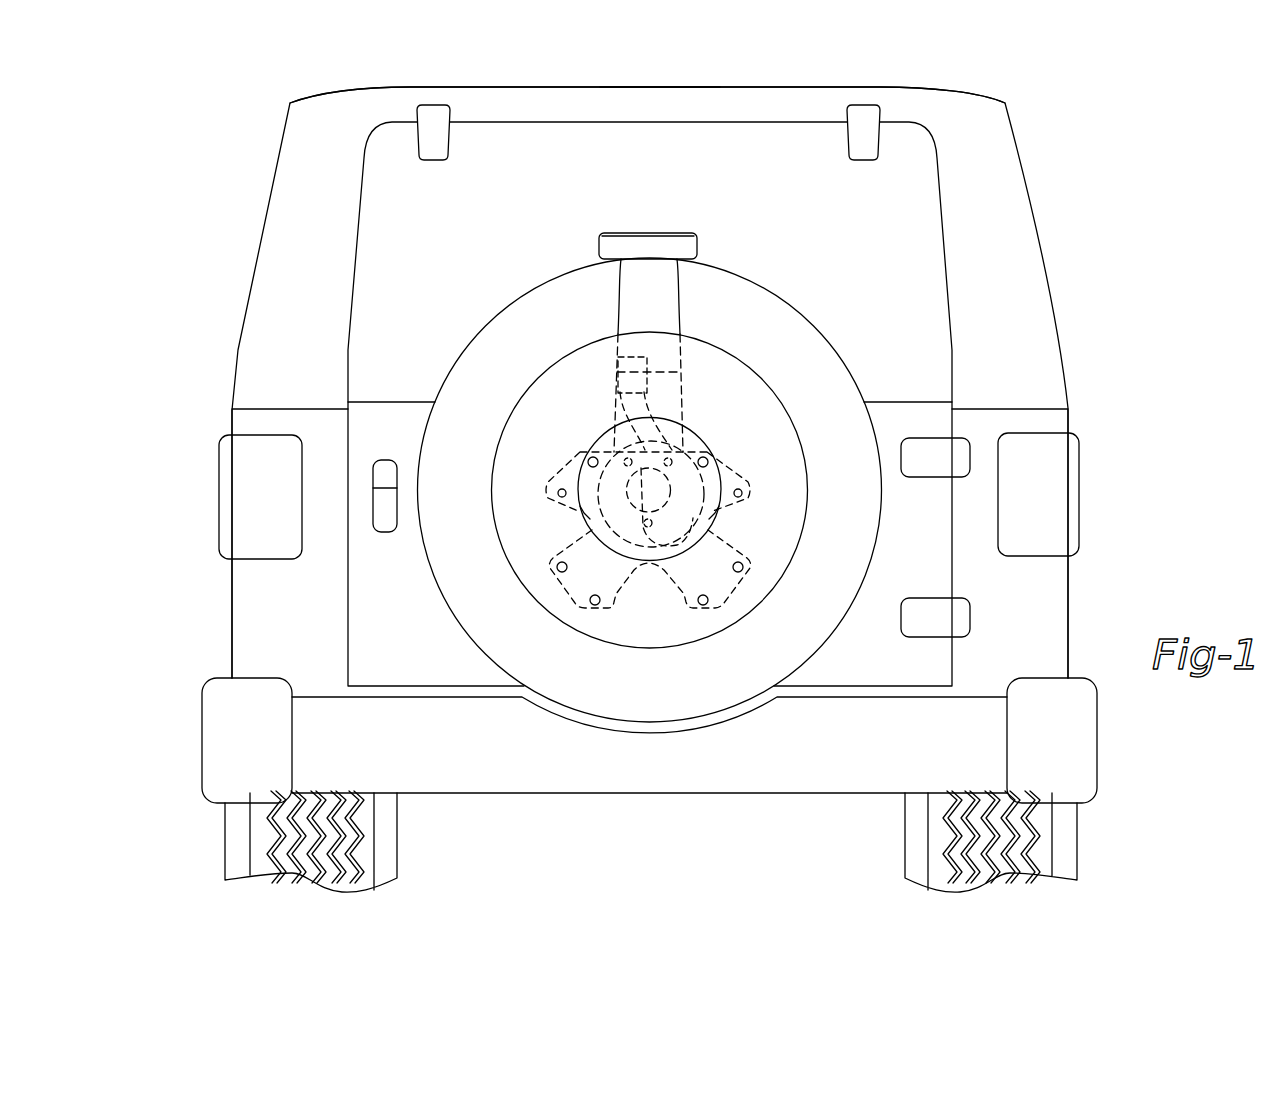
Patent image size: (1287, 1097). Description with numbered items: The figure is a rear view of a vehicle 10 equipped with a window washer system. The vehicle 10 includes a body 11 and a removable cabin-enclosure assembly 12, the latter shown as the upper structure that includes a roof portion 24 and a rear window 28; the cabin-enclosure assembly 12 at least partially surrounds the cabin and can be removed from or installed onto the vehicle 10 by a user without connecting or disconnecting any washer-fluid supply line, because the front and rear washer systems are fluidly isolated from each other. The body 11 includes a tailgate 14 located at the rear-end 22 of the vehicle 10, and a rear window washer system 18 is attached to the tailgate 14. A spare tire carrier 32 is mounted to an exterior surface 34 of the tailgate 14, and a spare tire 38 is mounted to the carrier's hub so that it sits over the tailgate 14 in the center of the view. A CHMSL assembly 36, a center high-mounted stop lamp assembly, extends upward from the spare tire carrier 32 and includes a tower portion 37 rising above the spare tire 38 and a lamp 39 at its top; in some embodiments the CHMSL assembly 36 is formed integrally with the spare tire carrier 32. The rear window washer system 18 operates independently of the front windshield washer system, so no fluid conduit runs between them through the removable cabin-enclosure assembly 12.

The vehicle 10 is at (1036, 114).
The body 11 is at (228, 577).
The cabin-enclosure assembly 12 is at (706, 82).
The tailgate 14 is at (345, 603).
The rear window washer system 18 is at (664, 440).
The rear-end 22 is at (1071, 581).
The roof portion 24 is at (657, 87).
The rear window 28 is at (485, 176).
The spare tire carrier 32 is at (732, 465).
The exterior surface 34 is at (930, 581).
The CHMSL assembly 36 is at (701, 240).
The tower portion 37 is at (620, 303).
The spare tire 38 is at (779, 300).
The lamp 39 is at (624, 232).